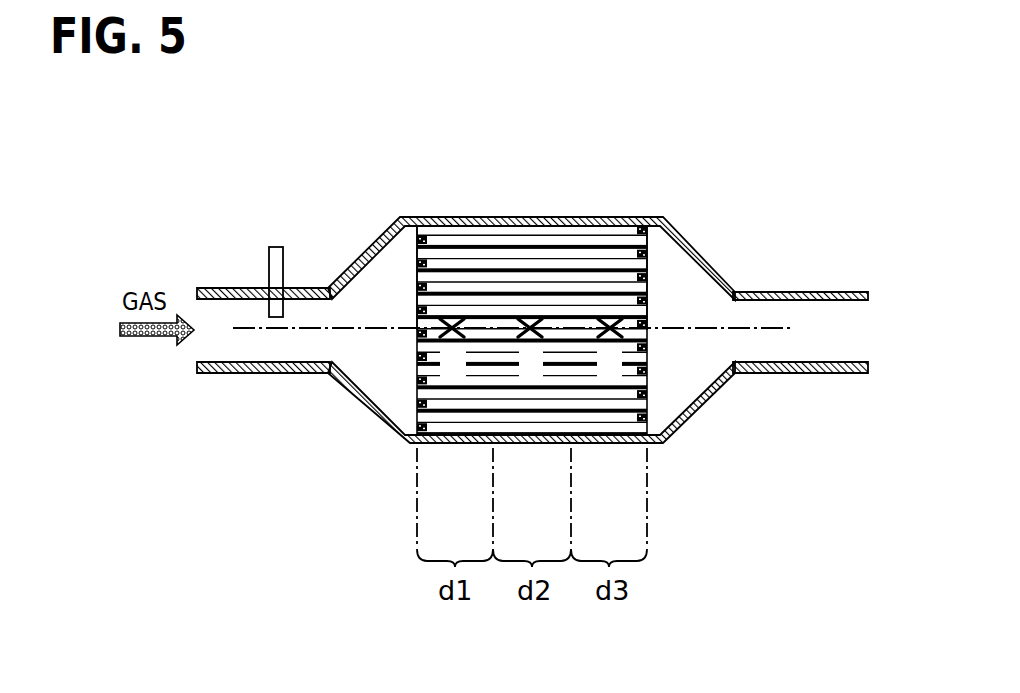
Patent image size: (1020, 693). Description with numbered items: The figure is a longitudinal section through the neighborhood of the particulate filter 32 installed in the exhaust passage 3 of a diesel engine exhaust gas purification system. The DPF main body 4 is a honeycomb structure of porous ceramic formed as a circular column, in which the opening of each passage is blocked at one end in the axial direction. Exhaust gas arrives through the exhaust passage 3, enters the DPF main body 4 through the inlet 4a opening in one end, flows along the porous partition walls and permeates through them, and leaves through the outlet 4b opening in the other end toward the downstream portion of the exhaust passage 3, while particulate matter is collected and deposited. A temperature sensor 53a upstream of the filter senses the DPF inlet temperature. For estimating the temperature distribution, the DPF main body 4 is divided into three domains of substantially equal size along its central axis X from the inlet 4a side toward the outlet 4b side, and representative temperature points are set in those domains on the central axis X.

The exhaust passage 3 is at (294, 386).
The DPF main body 4 is at (593, 248).
The inlet 4a is at (388, 228).
The outlet 4b is at (640, 283).
The particulate filter (DPF) 32 is at (462, 212).
The temperature sensor 53a is at (268, 272).
The central axis X is at (678, 327).